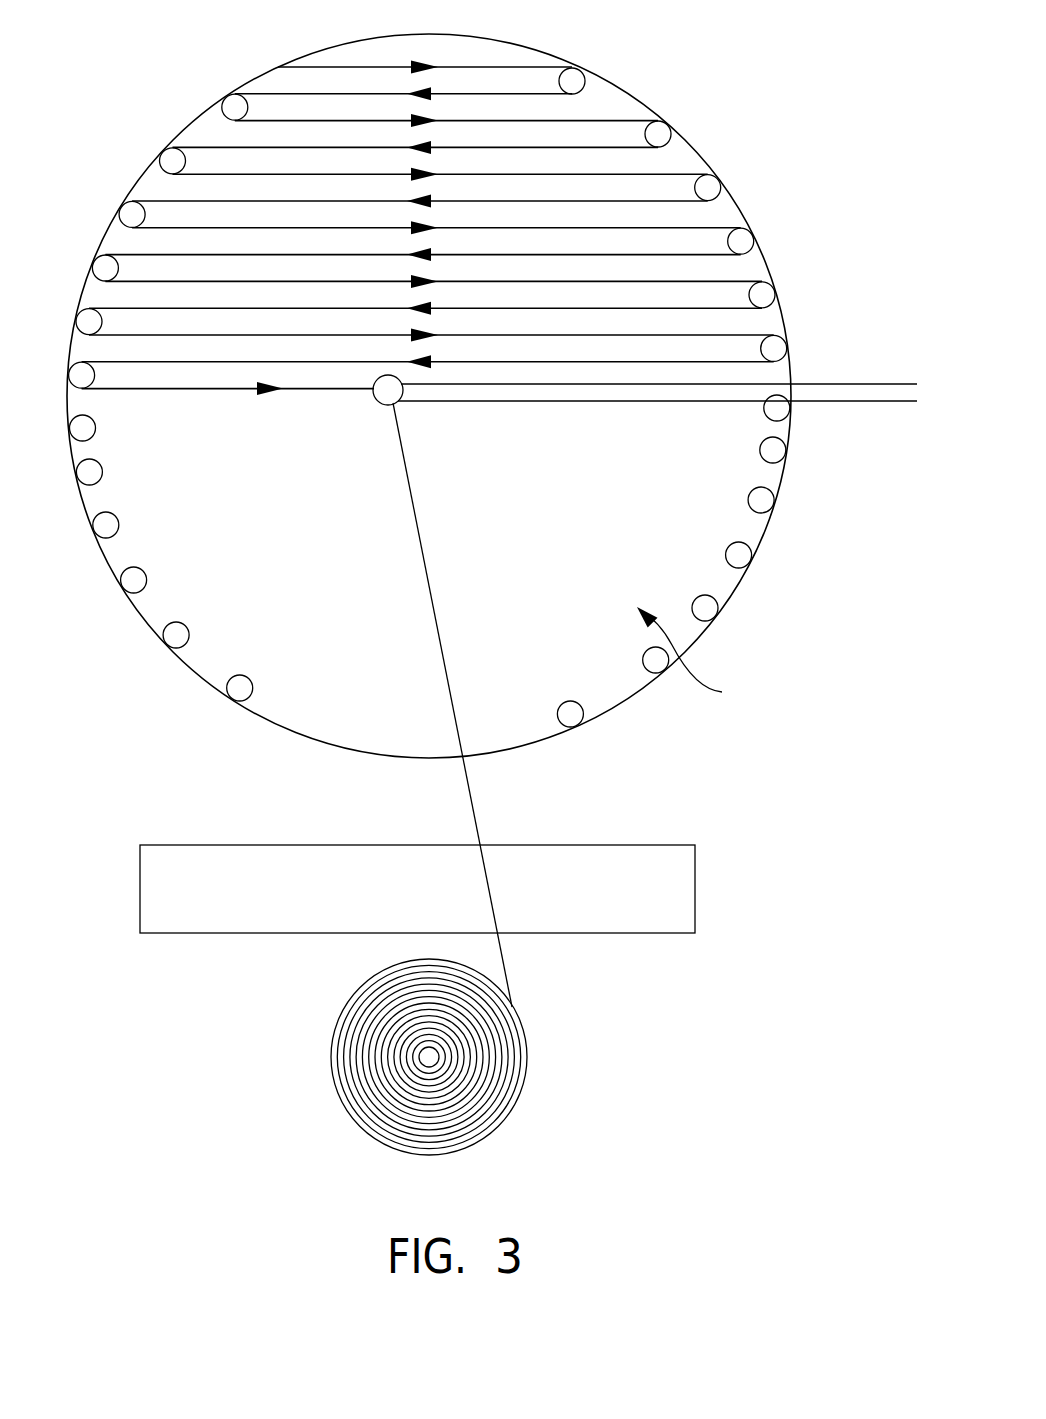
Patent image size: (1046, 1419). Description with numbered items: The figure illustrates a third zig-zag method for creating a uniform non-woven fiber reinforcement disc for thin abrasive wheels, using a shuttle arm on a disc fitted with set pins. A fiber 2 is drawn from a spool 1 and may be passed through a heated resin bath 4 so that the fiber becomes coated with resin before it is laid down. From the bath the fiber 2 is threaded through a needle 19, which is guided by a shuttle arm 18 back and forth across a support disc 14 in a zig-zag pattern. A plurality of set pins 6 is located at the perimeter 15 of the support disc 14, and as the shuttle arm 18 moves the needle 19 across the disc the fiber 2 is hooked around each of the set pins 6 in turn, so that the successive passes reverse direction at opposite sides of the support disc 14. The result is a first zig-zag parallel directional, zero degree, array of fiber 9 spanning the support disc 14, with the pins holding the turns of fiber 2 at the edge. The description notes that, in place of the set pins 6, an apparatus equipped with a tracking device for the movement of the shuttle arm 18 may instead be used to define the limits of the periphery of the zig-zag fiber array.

The coil of strip material 1 is at (515, 1078).
The fiber 2 is at (474, 812).
The heated resin bath 4 is at (596, 880).
The set pins 6 is at (593, 74).
The array of fiber 9 is at (706, 225).
The support disc 14 is at (698, 655).
The perimeter 15 is at (790, 454).
The shuttle arm 18 is at (852, 384).
The needle 19 is at (377, 402).